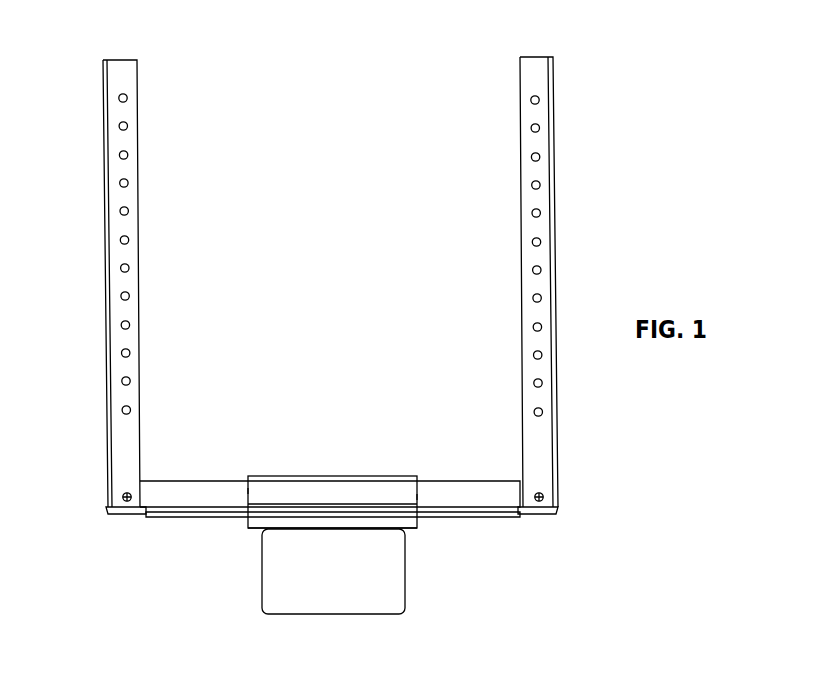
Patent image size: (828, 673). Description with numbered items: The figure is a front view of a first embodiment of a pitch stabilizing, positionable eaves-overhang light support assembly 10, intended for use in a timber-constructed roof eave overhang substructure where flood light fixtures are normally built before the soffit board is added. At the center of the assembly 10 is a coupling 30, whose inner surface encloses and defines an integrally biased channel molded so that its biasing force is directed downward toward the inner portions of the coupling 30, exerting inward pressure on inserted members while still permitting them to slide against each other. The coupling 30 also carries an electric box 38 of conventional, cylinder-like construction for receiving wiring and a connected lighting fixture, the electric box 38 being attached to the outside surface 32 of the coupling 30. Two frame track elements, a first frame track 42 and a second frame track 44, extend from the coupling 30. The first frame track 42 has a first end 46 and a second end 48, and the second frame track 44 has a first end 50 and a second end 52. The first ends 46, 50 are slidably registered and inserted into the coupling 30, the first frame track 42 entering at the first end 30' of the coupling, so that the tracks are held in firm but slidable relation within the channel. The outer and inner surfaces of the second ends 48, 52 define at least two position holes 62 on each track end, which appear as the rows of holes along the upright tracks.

The light support assembly 10 is at (386, 206).
The coupling 30 is at (332, 473).
The first end of the coupling 30' is at (228, 459).
The outside surface of the coupling 32 is at (408, 517).
The electric box 38 is at (396, 612).
The first frame track 42 is at (122, 516).
The second frame track 44 is at (553, 514).
The first end of the first frame track 46 is at (440, 481).
The second end of the first frame track 48 is at (125, 60).
The first end of the second frame track 50 is at (165, 518).
The second end of the second frame track 52 is at (535, 57).
The position holes 62 is at (121, 159).